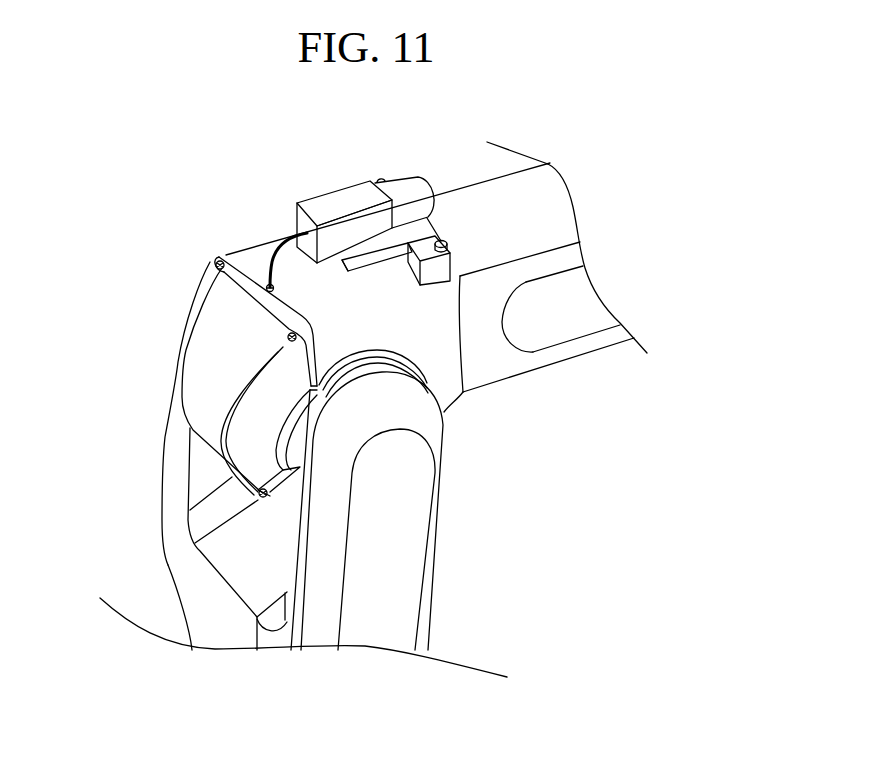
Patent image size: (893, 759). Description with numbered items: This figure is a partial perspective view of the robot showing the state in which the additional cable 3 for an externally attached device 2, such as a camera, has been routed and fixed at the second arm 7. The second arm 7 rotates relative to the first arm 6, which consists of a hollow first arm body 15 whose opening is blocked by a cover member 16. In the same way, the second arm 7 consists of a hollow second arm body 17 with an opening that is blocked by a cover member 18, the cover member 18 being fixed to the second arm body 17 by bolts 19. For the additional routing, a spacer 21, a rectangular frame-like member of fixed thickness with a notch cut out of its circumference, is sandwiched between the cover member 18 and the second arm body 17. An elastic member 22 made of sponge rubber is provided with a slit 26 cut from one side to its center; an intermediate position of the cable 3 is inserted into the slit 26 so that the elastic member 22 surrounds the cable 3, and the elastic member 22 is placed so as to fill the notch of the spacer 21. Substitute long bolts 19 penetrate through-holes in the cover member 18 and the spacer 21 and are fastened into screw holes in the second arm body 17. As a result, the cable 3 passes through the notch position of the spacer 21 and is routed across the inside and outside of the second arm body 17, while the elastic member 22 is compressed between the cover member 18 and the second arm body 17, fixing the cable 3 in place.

The device 2 is at (326, 190).
The cable 3 is at (270, 255).
The first arm 6 is at (150, 475).
The second arm 7 is at (457, 203).
The first arm body 15 is at (190, 567).
The cover member 16 is at (397, 527).
The second arm body 17 is at (486, 192).
The cover member 18 is at (205, 375).
The bolts 19 is at (217, 262).
The spacer 21 is at (285, 514).
The elastic member 22 is at (295, 290).
The slit 26 is at (265, 279).